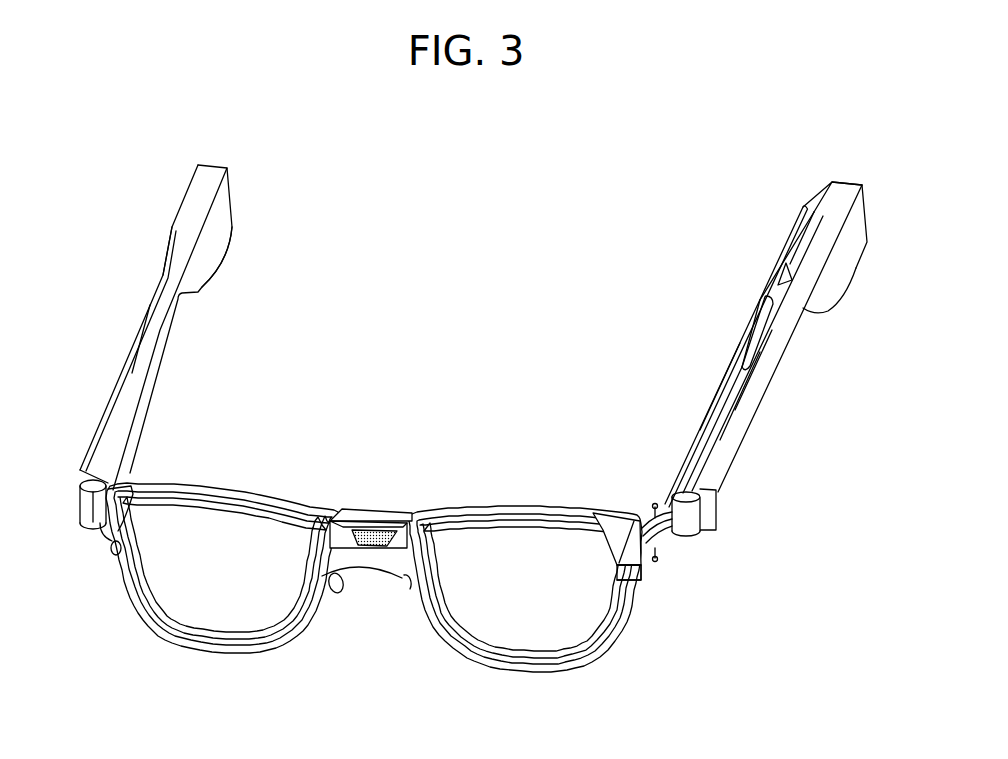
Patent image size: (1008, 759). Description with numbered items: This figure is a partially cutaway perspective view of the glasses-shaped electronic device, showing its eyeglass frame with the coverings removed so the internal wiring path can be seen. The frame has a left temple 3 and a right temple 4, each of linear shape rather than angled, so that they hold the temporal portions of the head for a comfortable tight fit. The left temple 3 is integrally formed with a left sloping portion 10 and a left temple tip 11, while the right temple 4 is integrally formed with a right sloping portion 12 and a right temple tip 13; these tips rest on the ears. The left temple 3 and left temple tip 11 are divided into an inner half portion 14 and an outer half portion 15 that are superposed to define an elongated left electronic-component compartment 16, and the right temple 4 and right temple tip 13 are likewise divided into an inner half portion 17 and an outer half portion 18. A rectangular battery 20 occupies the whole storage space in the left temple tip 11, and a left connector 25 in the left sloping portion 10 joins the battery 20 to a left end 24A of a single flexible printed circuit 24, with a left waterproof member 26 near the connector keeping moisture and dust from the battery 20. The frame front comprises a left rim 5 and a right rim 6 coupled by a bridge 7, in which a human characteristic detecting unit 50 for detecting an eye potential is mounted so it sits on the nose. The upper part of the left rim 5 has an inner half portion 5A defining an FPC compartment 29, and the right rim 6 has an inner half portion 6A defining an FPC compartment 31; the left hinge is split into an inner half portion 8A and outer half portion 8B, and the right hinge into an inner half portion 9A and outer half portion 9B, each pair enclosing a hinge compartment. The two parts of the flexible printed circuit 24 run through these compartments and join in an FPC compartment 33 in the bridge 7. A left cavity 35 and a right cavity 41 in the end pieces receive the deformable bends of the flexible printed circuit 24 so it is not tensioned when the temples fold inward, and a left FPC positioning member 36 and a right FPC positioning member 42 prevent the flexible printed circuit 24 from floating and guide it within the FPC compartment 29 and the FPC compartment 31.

The left temple 3 is at (772, 357).
The right temple 4 is at (160, 335).
The left rim 5 is at (475, 508).
The inner half portion 5A is at (510, 503).
The right rim 6 is at (190, 490).
The inner half portion 6A is at (263, 497).
The bridge 7 is at (350, 520).
The inner half portion 8A is at (670, 547).
The outer half portion 8B is at (697, 520).
The inner half portion 9A is at (100, 533).
The outer half portion 9B is at (82, 505).
The left sloping portion 10 is at (823, 297).
The left temple tip 11 is at (850, 252).
The right sloping portion 12 is at (163, 268).
The right temple tip 13 is at (212, 242).
The inner half portion 14 is at (708, 417).
The outer half portion 15 is at (755, 383).
The left electronic-component compartment 16 is at (730, 407).
The inner half portion 17 is at (127, 413).
The outer half portion 18 is at (132, 373).
The battery 20 is at (798, 247).
The flexible printed circuit 24 is at (277, 517).
The left end 24A is at (772, 312).
The left connector 25 is at (773, 297).
The left waterproof member 26 is at (738, 345).
The FPC compartment 29 is at (565, 505).
The FPC compartment 31 is at (223, 500).
The FPC compartment 33 is at (402, 530).
The left cavity 35 is at (655, 573).
The left FPC positioning member 36 is at (617, 520).
The right cavity 41 is at (113, 547).
The right FPC positioning member 42 is at (132, 487).
The human characteristic detecting unit 50 is at (376, 506).